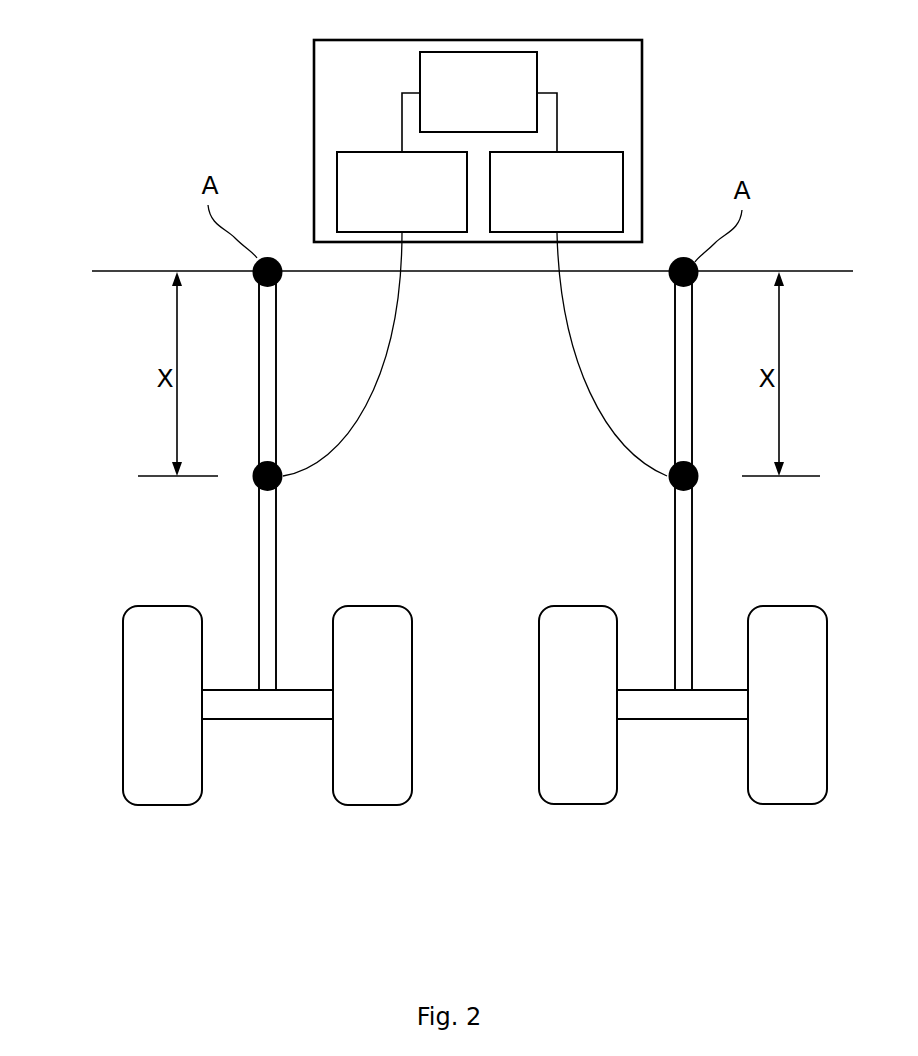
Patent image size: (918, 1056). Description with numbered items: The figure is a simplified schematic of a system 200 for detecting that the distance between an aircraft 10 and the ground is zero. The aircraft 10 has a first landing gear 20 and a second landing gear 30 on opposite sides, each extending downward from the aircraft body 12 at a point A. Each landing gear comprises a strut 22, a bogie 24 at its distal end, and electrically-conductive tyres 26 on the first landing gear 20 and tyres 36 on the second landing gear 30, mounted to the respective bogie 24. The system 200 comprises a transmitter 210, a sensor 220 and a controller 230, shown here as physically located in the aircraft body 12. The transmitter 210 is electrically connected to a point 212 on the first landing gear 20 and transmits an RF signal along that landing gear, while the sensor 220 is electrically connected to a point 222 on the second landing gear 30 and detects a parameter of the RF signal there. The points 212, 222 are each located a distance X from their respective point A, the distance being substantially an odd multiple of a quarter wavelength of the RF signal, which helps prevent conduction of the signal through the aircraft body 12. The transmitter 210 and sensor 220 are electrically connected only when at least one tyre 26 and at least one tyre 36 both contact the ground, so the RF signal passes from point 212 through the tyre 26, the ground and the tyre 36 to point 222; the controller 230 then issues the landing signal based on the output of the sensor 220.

The aircraft 10 is at (112, 151).
The aircraft body 12 is at (105, 270).
The system 200 is at (389, 124).
The transmitter 210 is at (402, 192).
The sensor 220 is at (556, 192).
The controller 230 is at (478, 92).
The first landing gear 20 is at (257, 585).
The second landing gear 30 is at (673, 583).
The strut 22 is at (278, 592).
The bogie 24 is at (267, 720).
The tyres 26 is at (138, 805).
The tyres 36 is at (555, 804).
The point 212 is at (283, 478).
The point 222 is at (698, 478).